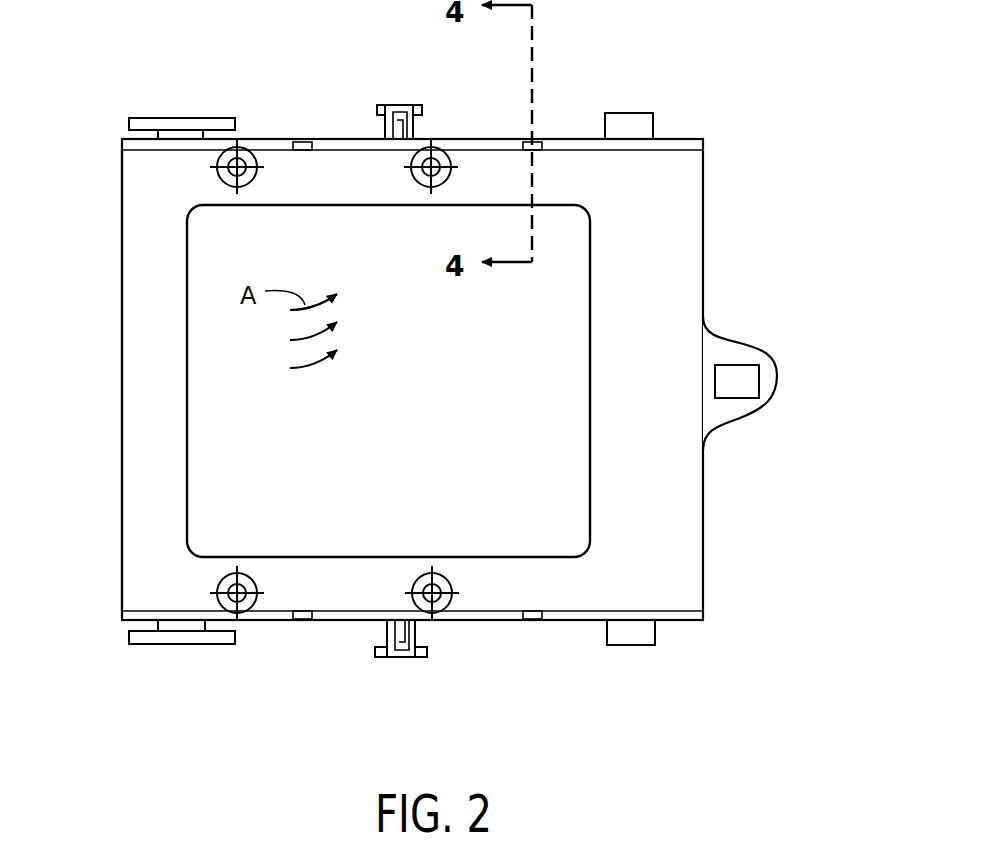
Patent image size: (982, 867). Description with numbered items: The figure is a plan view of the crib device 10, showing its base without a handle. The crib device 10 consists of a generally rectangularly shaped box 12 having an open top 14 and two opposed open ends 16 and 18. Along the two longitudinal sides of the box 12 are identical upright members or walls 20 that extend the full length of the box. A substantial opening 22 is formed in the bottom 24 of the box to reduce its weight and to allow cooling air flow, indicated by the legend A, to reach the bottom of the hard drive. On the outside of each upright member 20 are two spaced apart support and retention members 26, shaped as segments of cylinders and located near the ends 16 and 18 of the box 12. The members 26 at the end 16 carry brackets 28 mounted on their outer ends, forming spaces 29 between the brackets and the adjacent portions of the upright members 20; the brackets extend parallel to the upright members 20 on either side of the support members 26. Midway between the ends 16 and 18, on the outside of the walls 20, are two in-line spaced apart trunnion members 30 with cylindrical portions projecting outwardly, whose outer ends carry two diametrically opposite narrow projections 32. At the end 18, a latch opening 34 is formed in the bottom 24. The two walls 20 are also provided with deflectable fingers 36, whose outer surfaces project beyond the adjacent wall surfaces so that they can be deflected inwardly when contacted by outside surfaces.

The crib device 10 is at (762, 190).
The box 12 is at (695, 280).
The open top 14 is at (270, 160).
The open end 16 is at (132, 482).
The open end 18 is at (685, 486).
The upright member 20 is at (672, 139).
The opening 22 is at (398, 436).
The bottom 24 is at (142, 240).
The support and retention member 26 is at (133, 137).
The bracket 28 is at (183, 118).
The space 29 is at (213, 133).
The trunnion member 30 is at (385, 127).
The projection 32 is at (423, 107).
The latch opening 34 is at (748, 380).
The deflectable finger 36 is at (298, 150).